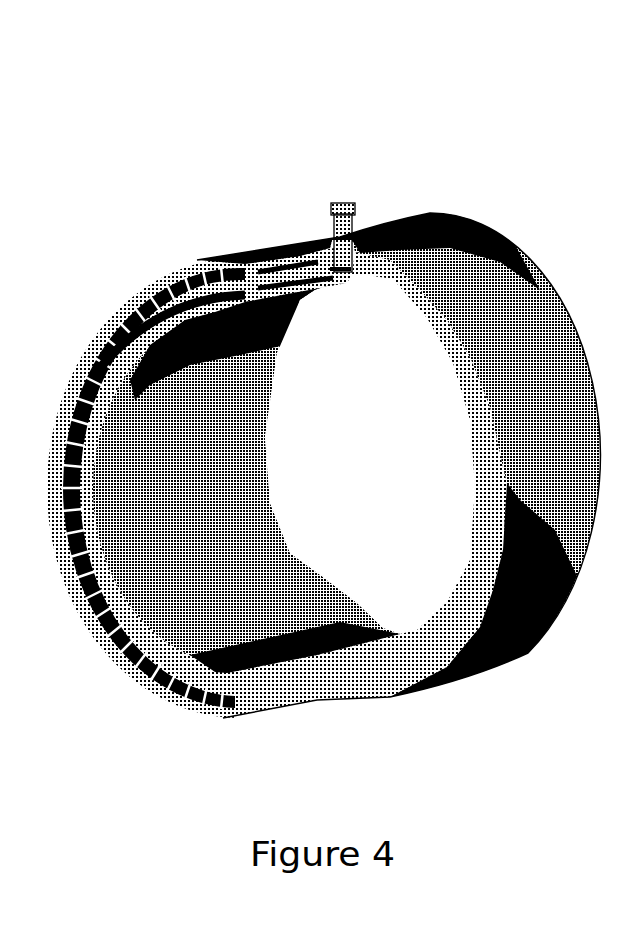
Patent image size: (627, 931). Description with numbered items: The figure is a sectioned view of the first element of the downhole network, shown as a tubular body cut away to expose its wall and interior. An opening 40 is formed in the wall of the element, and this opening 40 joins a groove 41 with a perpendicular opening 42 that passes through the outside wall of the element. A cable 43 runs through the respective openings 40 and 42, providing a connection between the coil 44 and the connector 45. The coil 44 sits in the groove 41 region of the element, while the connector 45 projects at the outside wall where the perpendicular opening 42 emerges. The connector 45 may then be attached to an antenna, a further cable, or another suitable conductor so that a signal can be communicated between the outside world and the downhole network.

The opening 40 is at (276, 256).
The groove 41 is at (103, 312).
The perpendicular opening 42 is at (389, 222).
The cable 43 is at (332, 252).
The coil 44 is at (178, 270).
The connector 45 is at (346, 204).